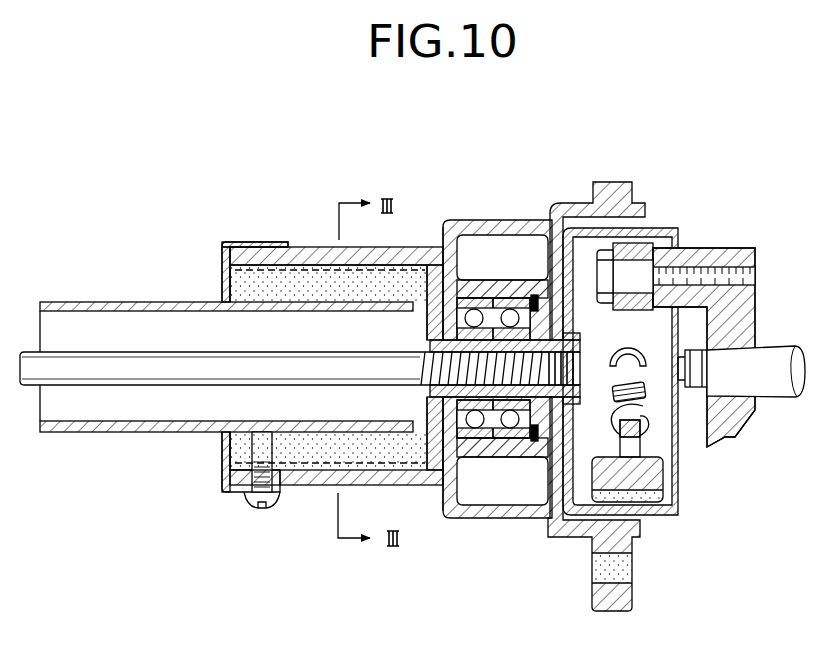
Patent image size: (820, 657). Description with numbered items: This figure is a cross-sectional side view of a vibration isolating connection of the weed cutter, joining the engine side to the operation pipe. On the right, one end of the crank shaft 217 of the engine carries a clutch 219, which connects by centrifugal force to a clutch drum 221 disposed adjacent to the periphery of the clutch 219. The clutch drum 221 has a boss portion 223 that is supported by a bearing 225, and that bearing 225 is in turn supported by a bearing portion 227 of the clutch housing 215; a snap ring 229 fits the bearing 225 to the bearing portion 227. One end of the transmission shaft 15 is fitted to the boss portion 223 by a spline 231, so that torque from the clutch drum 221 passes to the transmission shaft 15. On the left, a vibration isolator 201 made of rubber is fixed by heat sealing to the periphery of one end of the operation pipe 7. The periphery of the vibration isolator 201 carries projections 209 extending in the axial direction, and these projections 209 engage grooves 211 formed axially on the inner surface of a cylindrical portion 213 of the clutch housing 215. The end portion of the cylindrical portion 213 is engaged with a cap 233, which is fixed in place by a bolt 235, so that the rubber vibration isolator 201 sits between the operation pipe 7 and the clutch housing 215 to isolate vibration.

The operation pipe 7 is at (118, 302).
The transmission shaft 15 is at (182, 360).
The vibration isolator 201 is at (318, 253).
The projections 209 is at (328, 470).
The grooves 211 is at (305, 480).
The cylindrical portion 213 is at (300, 250).
The clutch housing 215 is at (567, 203).
The crank shaft 217 is at (772, 352).
The clutch 219 is at (672, 452).
The clutch drum 221 is at (657, 228).
The boss portion 223 is at (457, 300).
The bearing 225 is at (510, 305).
The bearing portion 227 is at (522, 290).
The snap ring 229 is at (537, 303).
The spline 231 is at (450, 347).
The cap 233 is at (222, 462).
The bolt 235 is at (248, 502).